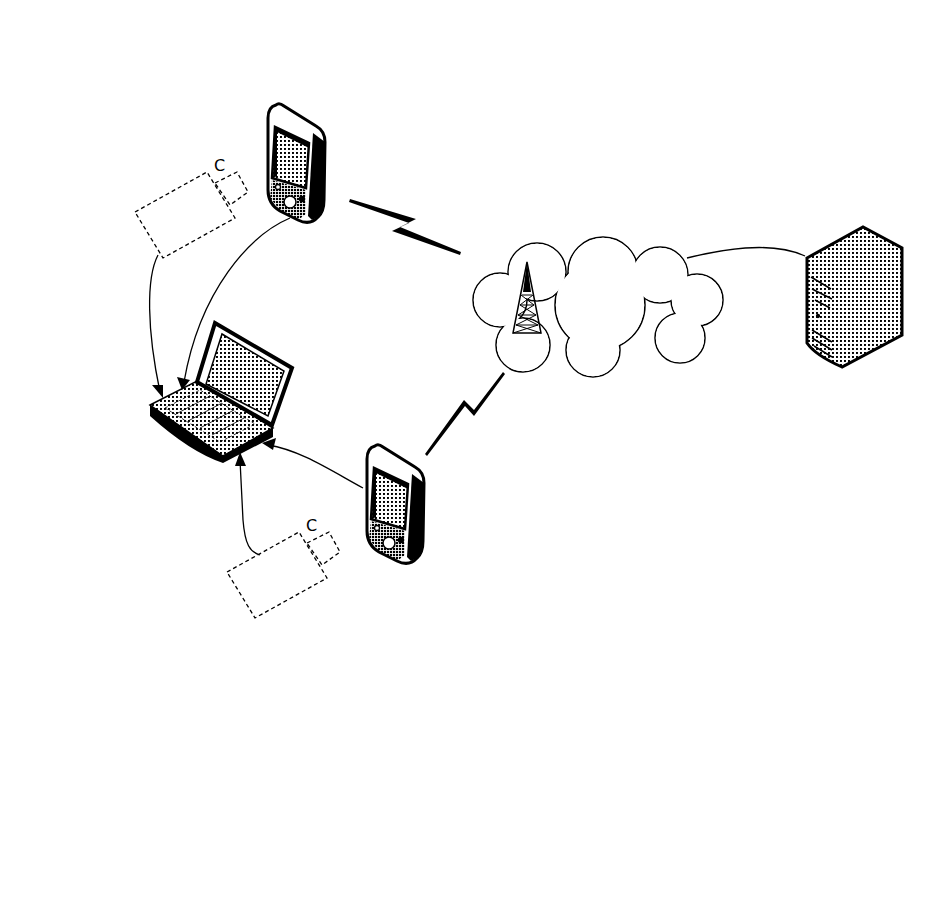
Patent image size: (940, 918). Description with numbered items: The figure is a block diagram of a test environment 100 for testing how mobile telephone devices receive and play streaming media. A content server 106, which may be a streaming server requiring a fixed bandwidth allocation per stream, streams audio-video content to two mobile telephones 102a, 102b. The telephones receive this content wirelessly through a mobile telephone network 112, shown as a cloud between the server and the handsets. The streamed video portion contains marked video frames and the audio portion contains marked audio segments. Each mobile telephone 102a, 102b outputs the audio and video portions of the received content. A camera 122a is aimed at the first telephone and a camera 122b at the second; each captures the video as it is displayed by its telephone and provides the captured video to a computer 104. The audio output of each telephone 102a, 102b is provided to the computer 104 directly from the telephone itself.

The test environment 100 is at (657, 84).
The mobile telephone 102a is at (312, 130).
The mobile telephone 102b is at (418, 489).
The computer 104 is at (280, 353).
The content server 106 is at (877, 233).
The mobile telephone network 112 is at (602, 233).
The camera 122a is at (145, 202).
The camera 122b is at (296, 596).